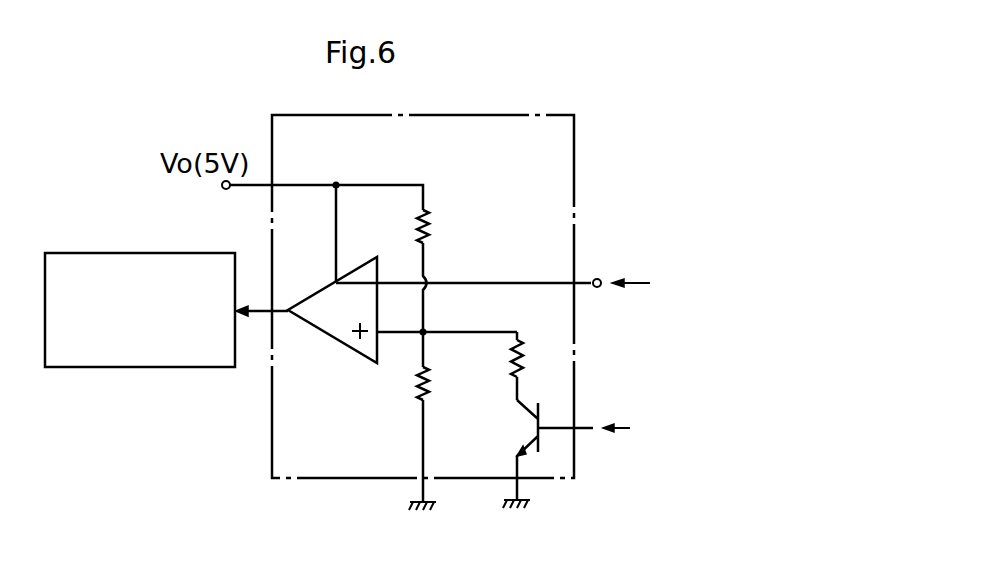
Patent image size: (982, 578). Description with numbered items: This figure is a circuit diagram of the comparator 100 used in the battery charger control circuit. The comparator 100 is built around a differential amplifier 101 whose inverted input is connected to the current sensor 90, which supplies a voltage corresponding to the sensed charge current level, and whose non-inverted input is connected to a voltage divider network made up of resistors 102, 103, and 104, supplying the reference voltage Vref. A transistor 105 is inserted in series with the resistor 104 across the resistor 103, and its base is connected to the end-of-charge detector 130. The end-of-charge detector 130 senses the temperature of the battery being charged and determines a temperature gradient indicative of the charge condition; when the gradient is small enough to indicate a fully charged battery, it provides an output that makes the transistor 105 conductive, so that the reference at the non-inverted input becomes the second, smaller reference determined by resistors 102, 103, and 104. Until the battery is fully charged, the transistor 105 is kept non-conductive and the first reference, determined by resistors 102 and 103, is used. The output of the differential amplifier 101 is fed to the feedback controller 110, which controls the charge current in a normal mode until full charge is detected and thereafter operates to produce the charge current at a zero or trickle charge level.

The comparator 100 is at (555, 113).
The differential amplifier 101 is at (331, 328).
The resistor 102 is at (430, 230).
The resistor 103 is at (415, 400).
The resistor 104 is at (525, 357).
The transistor 105 is at (528, 423).
The feedback controller 110 is at (77, 368).
The current sensor 90 is at (693, 277).
The end-of-charge detector 130 is at (711, 426).